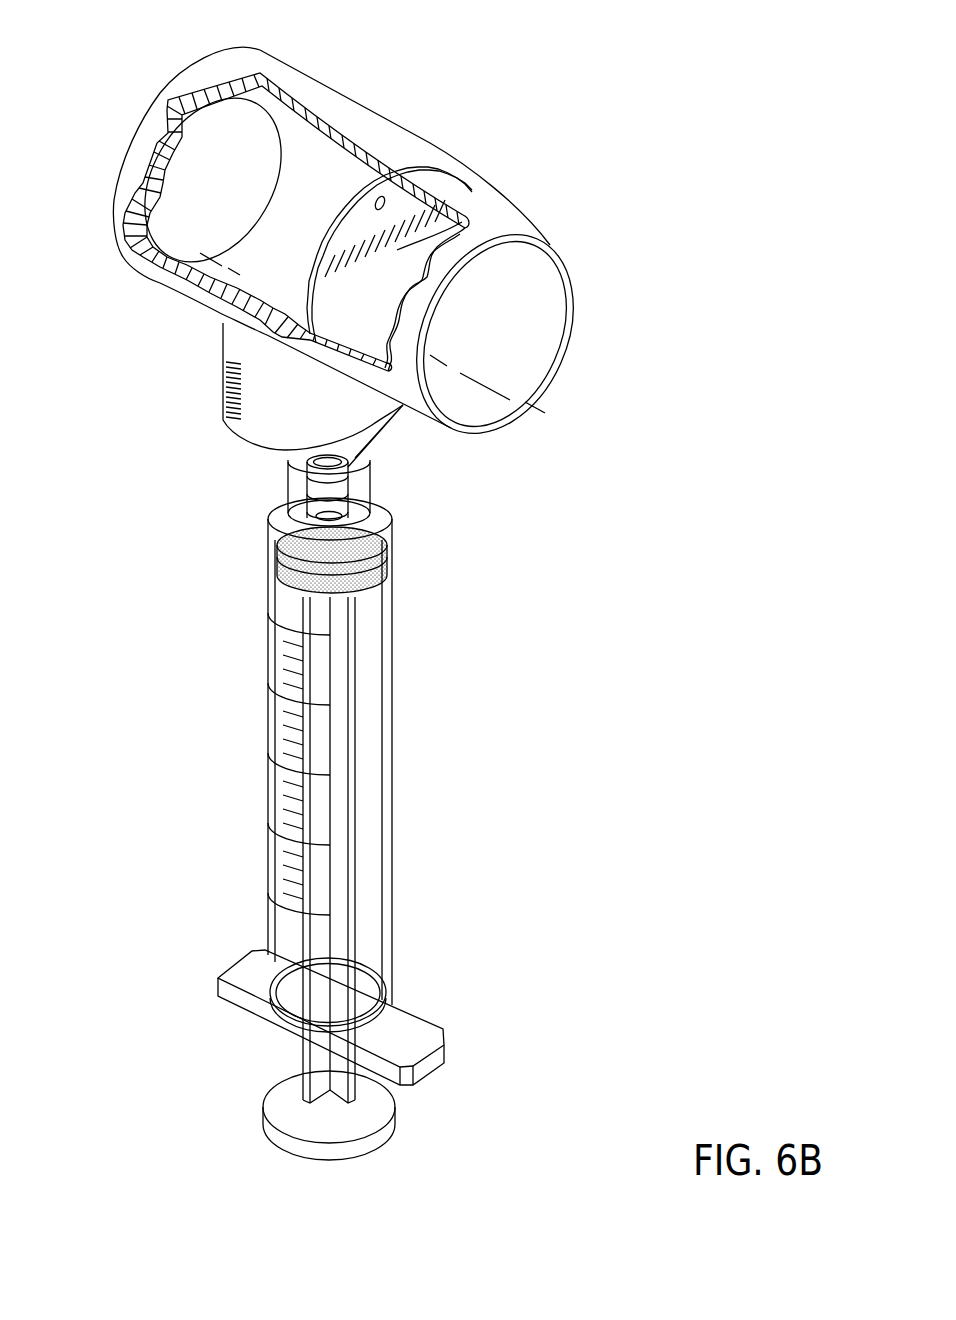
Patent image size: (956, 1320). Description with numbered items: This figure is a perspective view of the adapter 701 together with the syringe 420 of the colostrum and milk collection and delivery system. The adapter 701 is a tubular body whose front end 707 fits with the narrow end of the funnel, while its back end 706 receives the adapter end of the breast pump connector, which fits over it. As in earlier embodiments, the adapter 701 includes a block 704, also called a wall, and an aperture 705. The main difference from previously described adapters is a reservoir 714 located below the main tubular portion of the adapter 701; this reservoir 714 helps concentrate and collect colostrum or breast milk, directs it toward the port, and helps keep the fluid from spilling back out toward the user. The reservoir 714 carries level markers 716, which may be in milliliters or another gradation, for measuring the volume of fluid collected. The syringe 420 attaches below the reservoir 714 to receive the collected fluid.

The adapter 701 is at (350, 99).
The front end 707 is at (140, 118).
The aperture 705 is at (443, 180).
The block 704 is at (400, 245).
The back end 706 is at (573, 263).
The level markers 716 is at (217, 398).
The reservoir 714 is at (333, 412).
The syringe 420 is at (392, 757).